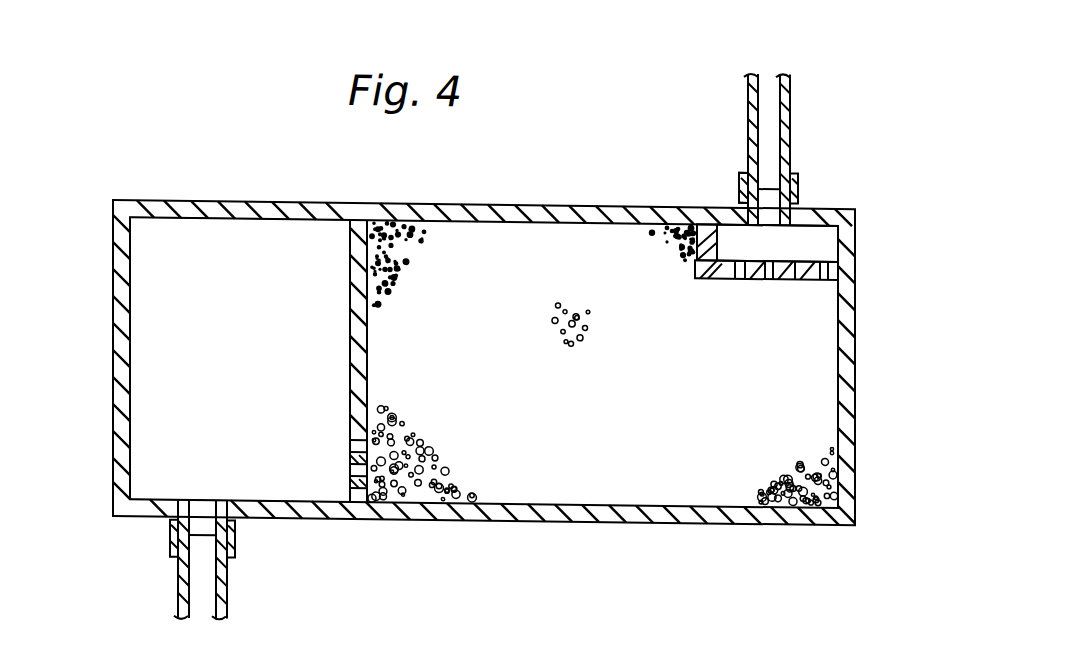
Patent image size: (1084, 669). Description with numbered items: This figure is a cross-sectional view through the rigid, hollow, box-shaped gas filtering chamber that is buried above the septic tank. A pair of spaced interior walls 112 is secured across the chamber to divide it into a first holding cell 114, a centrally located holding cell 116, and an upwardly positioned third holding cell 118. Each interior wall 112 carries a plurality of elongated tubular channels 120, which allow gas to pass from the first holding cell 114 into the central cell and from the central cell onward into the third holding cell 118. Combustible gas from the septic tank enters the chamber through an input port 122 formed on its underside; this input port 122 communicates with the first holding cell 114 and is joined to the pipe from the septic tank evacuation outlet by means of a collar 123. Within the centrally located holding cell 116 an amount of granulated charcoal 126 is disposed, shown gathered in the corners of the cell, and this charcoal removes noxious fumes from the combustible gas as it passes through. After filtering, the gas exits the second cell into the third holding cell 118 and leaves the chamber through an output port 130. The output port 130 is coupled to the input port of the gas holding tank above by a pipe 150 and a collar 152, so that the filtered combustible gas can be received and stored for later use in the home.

The interior wall 112 is at (349, 268).
The first holding cell 114 is at (218, 268).
The centrally located holding cell 116 is at (588, 232).
The third holding cell 118 is at (820, 232).
The elongated tubular channels 120 is at (350, 443).
The input port 122 is at (232, 518).
The collar 123 is at (170, 543).
The granulated charcoal 126 is at (400, 416).
The output port 130 is at (798, 176).
The pipe 150 is at (790, 87).
The collar 152 is at (739, 168).